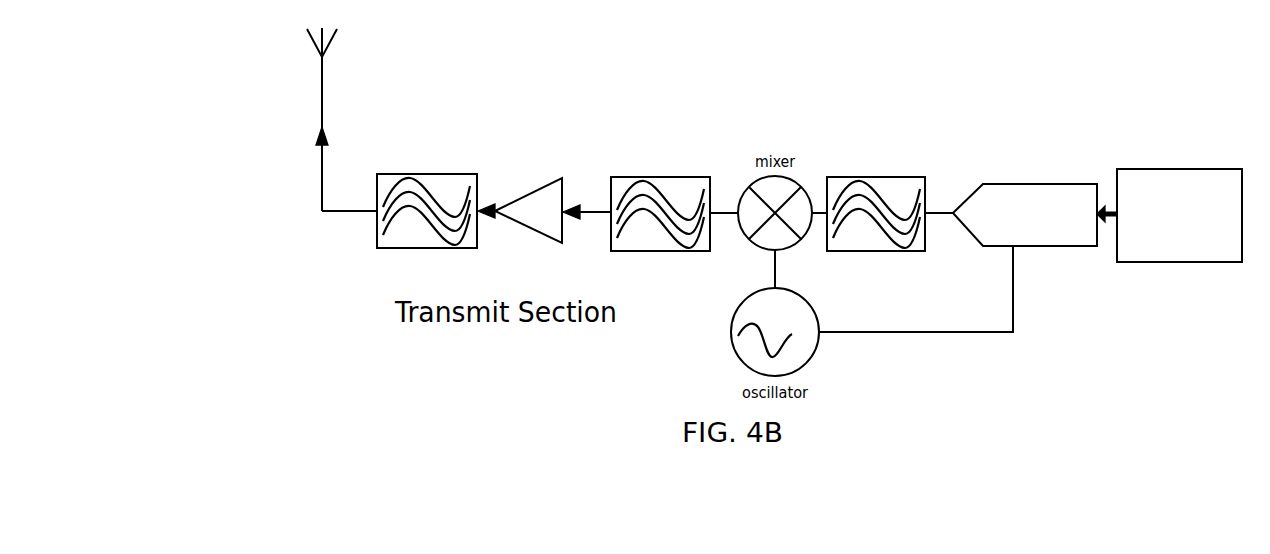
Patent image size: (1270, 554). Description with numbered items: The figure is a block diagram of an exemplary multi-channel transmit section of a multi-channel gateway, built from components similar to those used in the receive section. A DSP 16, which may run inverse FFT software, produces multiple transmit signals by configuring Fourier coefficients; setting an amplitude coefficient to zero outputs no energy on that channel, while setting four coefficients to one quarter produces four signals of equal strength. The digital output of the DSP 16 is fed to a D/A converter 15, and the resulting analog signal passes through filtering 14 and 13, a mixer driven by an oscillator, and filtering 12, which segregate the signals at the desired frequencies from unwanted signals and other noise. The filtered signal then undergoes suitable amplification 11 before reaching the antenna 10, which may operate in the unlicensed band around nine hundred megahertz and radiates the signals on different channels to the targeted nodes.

The antenna 10 is at (298, 63).
The amplification 11 is at (520, 118).
The filtering 12 is at (432, 152).
The filtering 13 is at (663, 155).
The filtering 14 is at (875, 155).
The D/A converter 15 is at (1027, 155).
The DSP 16 is at (1163, 147).